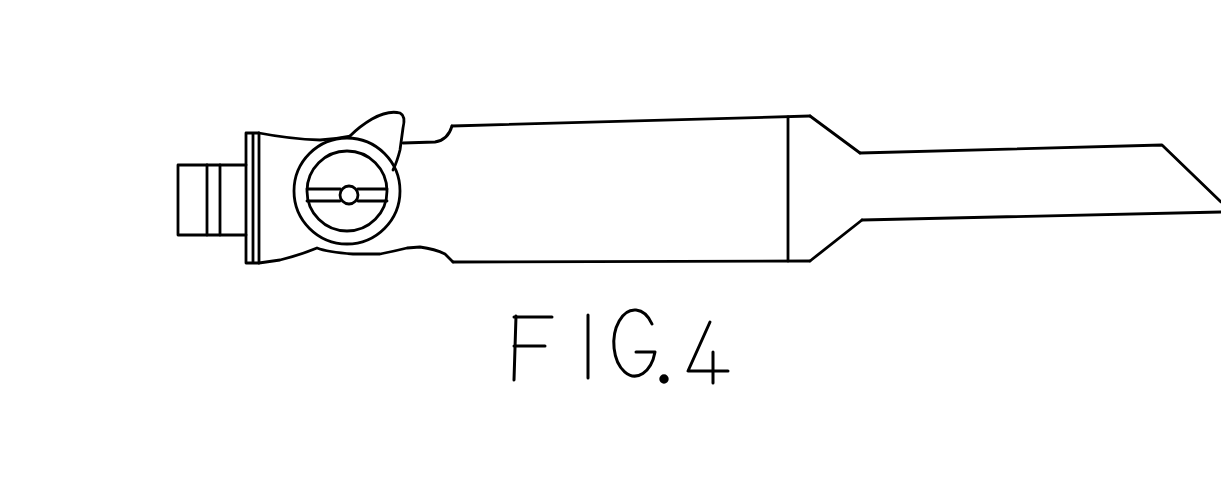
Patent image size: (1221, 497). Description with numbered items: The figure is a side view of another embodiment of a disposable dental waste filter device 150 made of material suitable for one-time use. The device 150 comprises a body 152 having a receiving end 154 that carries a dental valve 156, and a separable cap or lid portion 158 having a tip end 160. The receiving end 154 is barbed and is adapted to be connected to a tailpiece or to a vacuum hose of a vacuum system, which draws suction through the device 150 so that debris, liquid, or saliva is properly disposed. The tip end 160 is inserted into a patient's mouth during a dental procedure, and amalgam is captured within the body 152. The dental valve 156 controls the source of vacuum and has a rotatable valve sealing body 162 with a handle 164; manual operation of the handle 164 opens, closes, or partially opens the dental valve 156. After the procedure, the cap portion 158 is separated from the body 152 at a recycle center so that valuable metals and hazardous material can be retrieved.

The disposable dental waste filter device 150 is at (648, 83).
The body 152 is at (546, 156).
The receiving end 154 is at (206, 140).
The dental valve 156 is at (323, 107).
The cap portion 158 is at (827, 216).
The tip end 160 is at (1044, 170).
The rotatable valve sealing body 162 is at (342, 223).
The handle 164 is at (387, 138).